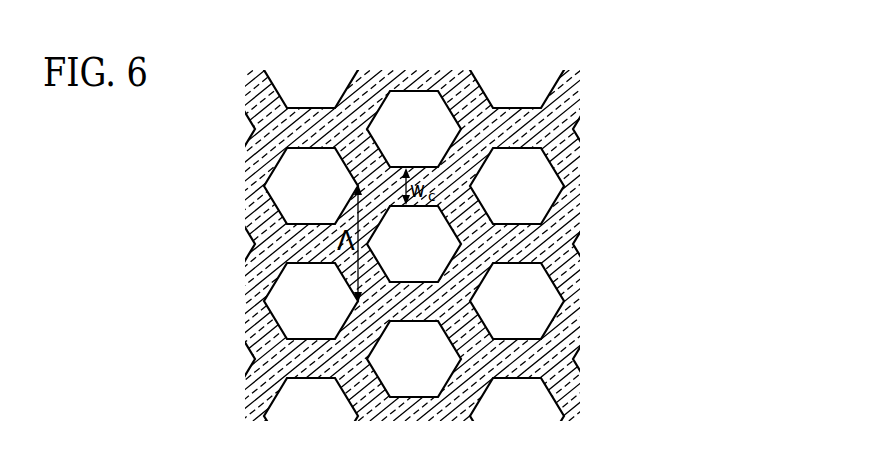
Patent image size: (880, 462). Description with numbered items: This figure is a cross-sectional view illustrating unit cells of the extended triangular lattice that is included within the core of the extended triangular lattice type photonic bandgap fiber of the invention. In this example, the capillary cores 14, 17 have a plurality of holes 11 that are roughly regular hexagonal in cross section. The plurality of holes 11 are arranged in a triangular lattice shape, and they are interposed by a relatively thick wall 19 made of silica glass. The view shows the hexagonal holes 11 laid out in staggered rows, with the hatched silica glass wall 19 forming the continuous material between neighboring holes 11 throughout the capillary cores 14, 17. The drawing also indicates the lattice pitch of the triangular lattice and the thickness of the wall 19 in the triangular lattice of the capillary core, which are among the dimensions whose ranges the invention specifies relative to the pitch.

The hole 11 is at (387, 107).
The wall 19 is at (413, 167).
The capillary core 14 is at (592, 164).
The capillary core 17 is at (440, 233).